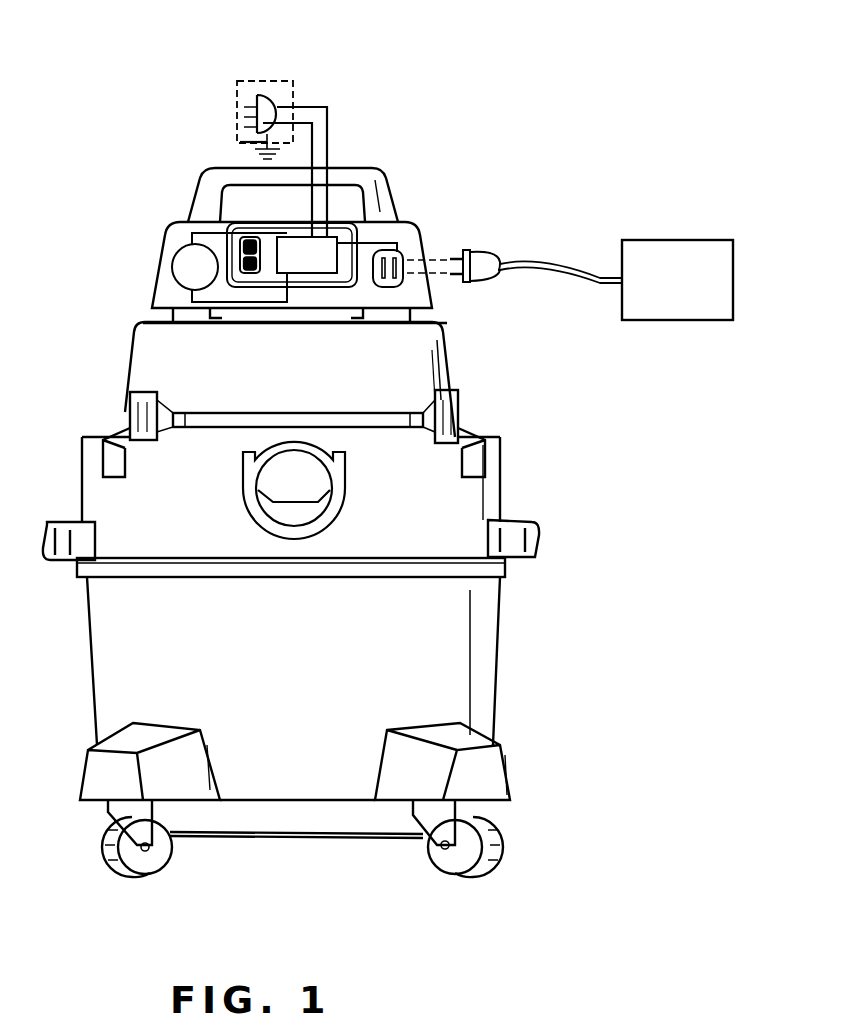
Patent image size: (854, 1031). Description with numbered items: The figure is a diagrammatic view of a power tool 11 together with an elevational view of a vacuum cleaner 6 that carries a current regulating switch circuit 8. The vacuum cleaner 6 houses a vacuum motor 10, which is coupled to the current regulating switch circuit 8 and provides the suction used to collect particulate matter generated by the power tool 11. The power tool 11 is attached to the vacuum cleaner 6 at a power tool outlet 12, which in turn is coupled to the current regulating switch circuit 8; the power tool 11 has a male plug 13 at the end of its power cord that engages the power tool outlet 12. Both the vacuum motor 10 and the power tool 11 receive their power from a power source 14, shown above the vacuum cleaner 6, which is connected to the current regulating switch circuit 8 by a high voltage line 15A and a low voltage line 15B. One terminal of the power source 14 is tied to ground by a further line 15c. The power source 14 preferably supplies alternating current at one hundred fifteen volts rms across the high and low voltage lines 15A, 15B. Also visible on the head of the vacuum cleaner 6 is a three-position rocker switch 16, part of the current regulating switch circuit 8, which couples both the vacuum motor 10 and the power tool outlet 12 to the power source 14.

The vacuum motor 10 is at (172, 268).
The vacuum cleaner 6 is at (398, 173).
The current regulating switch circuit 8 is at (298, 268).
The power tool 11 is at (664, 296).
The power tool outlet 12 is at (405, 246).
The male plug 13 is at (486, 252).
The power source 14 is at (265, 76).
The high voltage line 15A is at (328, 118).
The low voltage line 15B is at (313, 148).
The line 15c is at (240, 142).
The three-position rocker switch 16 is at (248, 276).